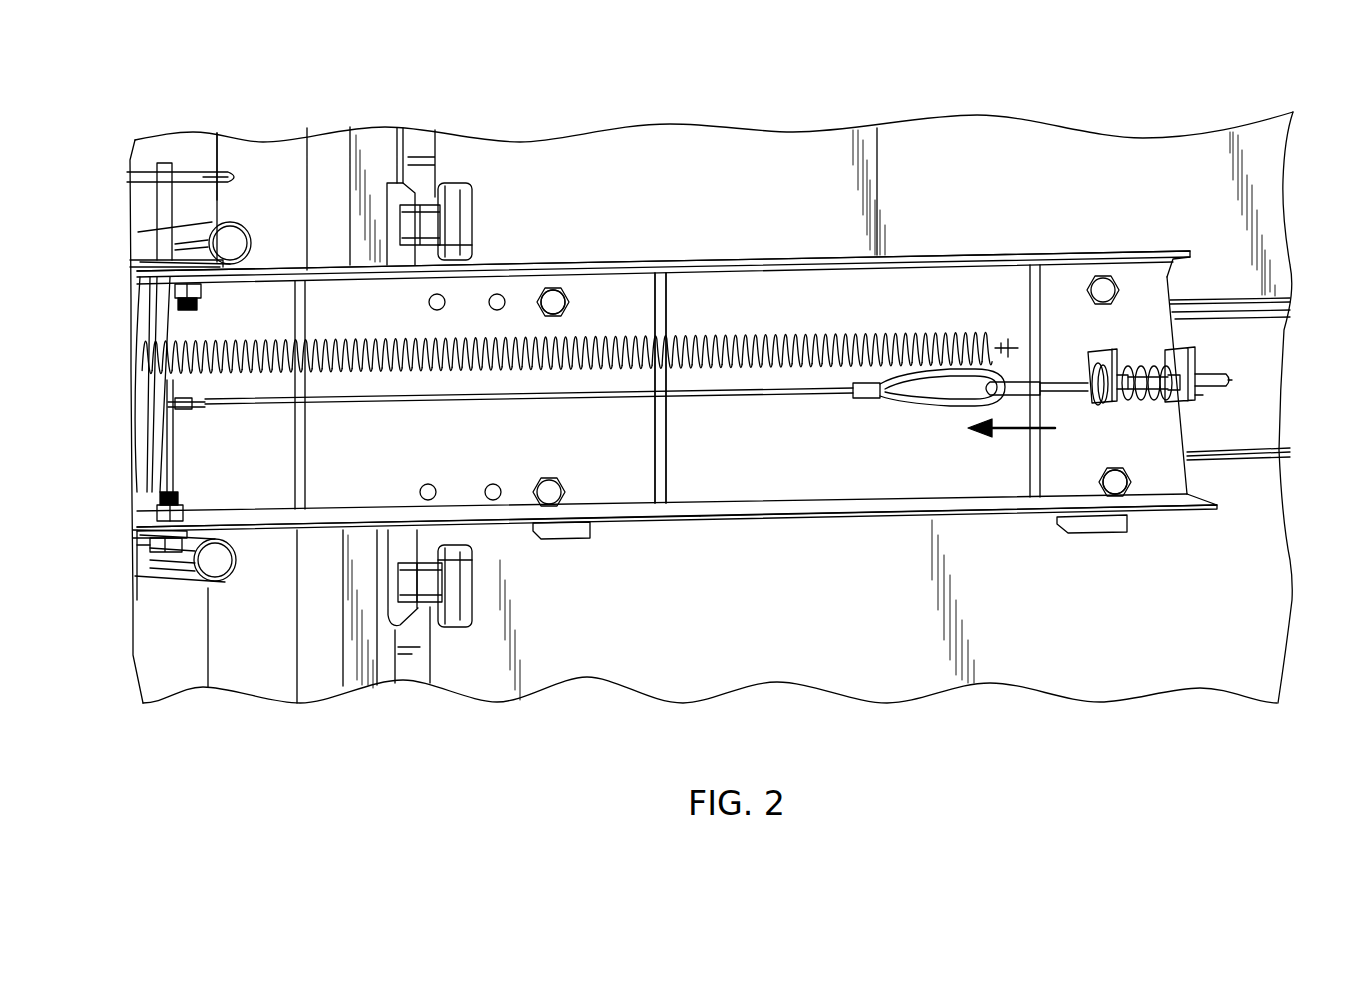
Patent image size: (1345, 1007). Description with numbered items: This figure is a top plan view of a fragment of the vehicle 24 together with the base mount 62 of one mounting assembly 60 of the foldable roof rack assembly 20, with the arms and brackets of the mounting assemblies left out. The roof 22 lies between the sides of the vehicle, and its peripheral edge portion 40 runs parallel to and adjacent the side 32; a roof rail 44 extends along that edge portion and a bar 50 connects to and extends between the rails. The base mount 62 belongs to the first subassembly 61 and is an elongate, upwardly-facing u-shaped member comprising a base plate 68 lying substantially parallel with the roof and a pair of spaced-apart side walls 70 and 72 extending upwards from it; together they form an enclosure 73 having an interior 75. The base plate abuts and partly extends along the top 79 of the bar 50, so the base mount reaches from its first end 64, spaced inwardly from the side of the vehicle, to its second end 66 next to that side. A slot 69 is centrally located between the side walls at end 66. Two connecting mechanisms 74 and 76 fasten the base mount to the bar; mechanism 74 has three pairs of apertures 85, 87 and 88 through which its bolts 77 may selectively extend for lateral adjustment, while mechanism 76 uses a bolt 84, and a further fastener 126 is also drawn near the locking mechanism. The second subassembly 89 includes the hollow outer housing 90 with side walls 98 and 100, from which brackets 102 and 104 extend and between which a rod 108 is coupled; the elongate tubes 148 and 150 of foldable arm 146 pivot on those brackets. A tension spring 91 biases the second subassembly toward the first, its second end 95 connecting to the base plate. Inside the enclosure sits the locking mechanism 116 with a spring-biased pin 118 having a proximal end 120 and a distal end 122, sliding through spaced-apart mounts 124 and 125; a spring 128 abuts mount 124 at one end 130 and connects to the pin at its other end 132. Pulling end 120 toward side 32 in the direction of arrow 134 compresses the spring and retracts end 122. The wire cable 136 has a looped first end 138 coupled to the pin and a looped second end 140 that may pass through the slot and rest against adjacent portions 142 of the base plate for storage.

The foldable roof rack assembly 20 is at (908, 242).
The roof 22 is at (711, 407).
The vehicle 24 is at (213, 150).
The side 32 is at (240, 680).
The peripheral edge portion 40 is at (317, 690).
The roof rail 44 is at (357, 678).
The bar 50 is at (1252, 435).
The mounting assembly 60 is at (775, 530).
The first subassembly 61 is at (687, 530).
The base mount 62 is at (848, 520).
The first end 64 is at (1195, 518).
The second end 66 is at (175, 282).
The base plate 68 is at (667, 387).
The slot 69 is at (183, 407).
The side wall 70 is at (1002, 252).
The side wall 72 is at (998, 515).
The enclosure 73 is at (643, 290).
The connecting mechanism 74 is at (560, 542).
The interior 75 is at (690, 293).
The connecting mechanism 76 is at (1095, 538).
The bolts 77 is at (572, 304).
The top 79 is at (800, 262).
The bolt 84 is at (1110, 483).
The apertures 85 is at (437, 265).
The apertures 87 is at (498, 268).
The apertures 88 is at (565, 268).
The second subassembly 89 is at (133, 250).
The outer housing 90 is at (144, 552).
The tension spring 91 is at (348, 340).
The second end 95 is at (1005, 345).
The side wall 98 is at (140, 272).
The side wall 100 is at (140, 530).
The bracket 102 is at (150, 252).
The bracket 104 is at (140, 545).
The rod 108 is at (152, 322).
The locking mechanism 116 is at (1245, 391).
The spring-biased pin 118 is at (1205, 396).
The proximal end 120 is at (1065, 378).
The distal end 122 is at (1230, 380).
The mount 124 is at (1106, 350).
The mount 125 is at (1180, 350).
The bolt 126 is at (1114, 470).
The spring 128 is at (1145, 366).
The end 130 is at (1112, 408).
The end 132 is at (1162, 404).
The arrow 134 is at (1010, 432).
The wire cable 136 is at (722, 400).
The first end 138 is at (913, 405).
The second end 140 is at (183, 382).
The adjacent portions 142 is at (195, 410).
The foldable arm 146 is at (229, 585).
The elongate tube 148 is at (236, 236).
The elongate tube 150 is at (226, 558).